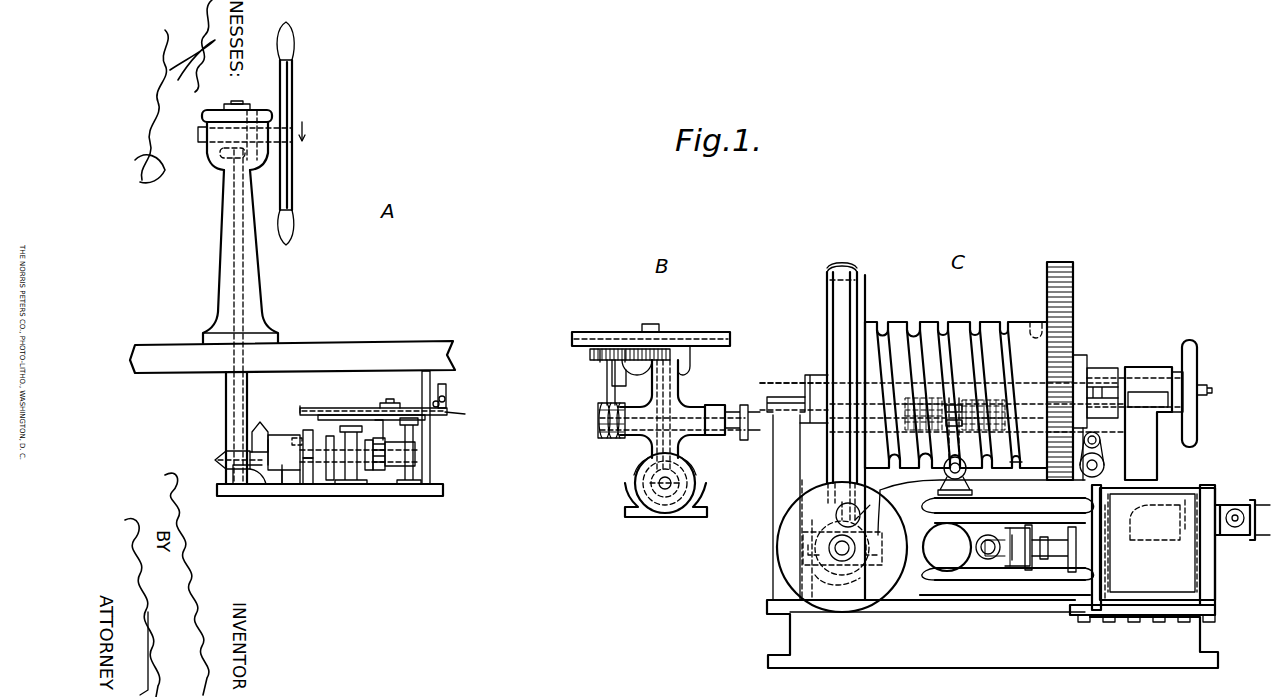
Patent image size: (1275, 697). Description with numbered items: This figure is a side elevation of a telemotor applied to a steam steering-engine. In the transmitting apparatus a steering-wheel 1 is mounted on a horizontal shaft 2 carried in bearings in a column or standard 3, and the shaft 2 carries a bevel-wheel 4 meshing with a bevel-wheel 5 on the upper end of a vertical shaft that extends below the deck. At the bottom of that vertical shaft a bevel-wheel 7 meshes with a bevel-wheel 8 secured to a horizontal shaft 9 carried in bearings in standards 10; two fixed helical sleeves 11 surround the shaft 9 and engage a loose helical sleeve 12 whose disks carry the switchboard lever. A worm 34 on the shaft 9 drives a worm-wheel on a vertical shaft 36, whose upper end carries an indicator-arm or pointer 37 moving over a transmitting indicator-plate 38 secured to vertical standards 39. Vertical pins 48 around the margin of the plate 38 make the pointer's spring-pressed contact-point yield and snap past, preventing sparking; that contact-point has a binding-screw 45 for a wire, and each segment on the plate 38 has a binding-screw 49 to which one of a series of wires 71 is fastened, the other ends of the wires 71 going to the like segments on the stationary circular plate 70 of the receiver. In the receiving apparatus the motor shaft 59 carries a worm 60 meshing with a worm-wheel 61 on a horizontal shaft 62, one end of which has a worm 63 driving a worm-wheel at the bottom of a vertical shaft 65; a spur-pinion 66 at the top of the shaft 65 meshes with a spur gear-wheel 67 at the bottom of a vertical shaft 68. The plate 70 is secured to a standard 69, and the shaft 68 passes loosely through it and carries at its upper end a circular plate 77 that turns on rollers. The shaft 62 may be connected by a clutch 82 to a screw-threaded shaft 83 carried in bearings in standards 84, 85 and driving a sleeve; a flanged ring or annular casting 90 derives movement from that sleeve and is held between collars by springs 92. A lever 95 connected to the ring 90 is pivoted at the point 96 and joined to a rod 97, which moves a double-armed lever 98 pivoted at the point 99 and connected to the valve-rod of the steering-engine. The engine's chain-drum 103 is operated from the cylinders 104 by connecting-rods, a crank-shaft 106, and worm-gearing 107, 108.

The steering-wheel 1 is at (294, 111).
The horizontal shaft 2 is at (212, 134).
The column or standard 3 is at (256, 270).
The bevel-wheel 4 is at (248, 118).
The bevel-wheel 5 is at (222, 160).
The bevel-wheel 7 is at (214, 458).
The bevel-wheel 8 is at (262, 428).
The horizontal shaft 9 is at (355, 455).
The standards 10 is at (278, 440).
The fixed helical sleeves 11 is at (340, 462).
The loose helical sleeve 12 is at (316, 452).
The worm 34 is at (376, 455).
The vertical shaft 36 is at (376, 440).
The indicator-arm or pointer 37 is at (386, 406).
The transmitting indicator-plate 38 is at (348, 408).
The vertical standards 39 is at (418, 461).
The binding-screw 45 is at (442, 390).
The vertical pins 48 is at (448, 402).
The binding-screw 49 is at (456, 413).
The circular plate 70 is at (742, 347).
The wires 71 is at (455, 412).
The motor shaft 59 is at (690, 480).
The worm 60 is at (650, 482).
The worm-wheel 61 is at (658, 448).
The horizontal shaft 62 is at (682, 418).
The worm 63 is at (606, 429).
The vertical shaft 65 is at (607, 389).
The spur-pinion 66 is at (619, 357).
The spur gear-wheel 67 is at (636, 371).
The vertical shaft 68 is at (652, 348).
The standard 69 is at (698, 361).
The circular plate 77 is at (732, 334).
The clutch 82 is at (716, 435).
The shaft 83 is at (836, 422).
The standard 84 is at (774, 479).
The standard 85 is at (1142, 410).
The flanged ring or annular casting 90 is at (952, 400).
The springs 92 is at (968, 400).
The lever 95 is at (950, 430).
The pivot point 96 is at (944, 476).
The rod 97 is at (1016, 462).
The double-armed lever 98 is at (1100, 441).
The pivot point 99 is at (1103, 463).
The chain-drum 103 is at (956, 382).
The cylinders 104 is at (1170, 553).
The crank-shaft 106 is at (842, 543).
The worm-gearing 107 is at (872, 538).
The worm-gearing 108 is at (846, 431).